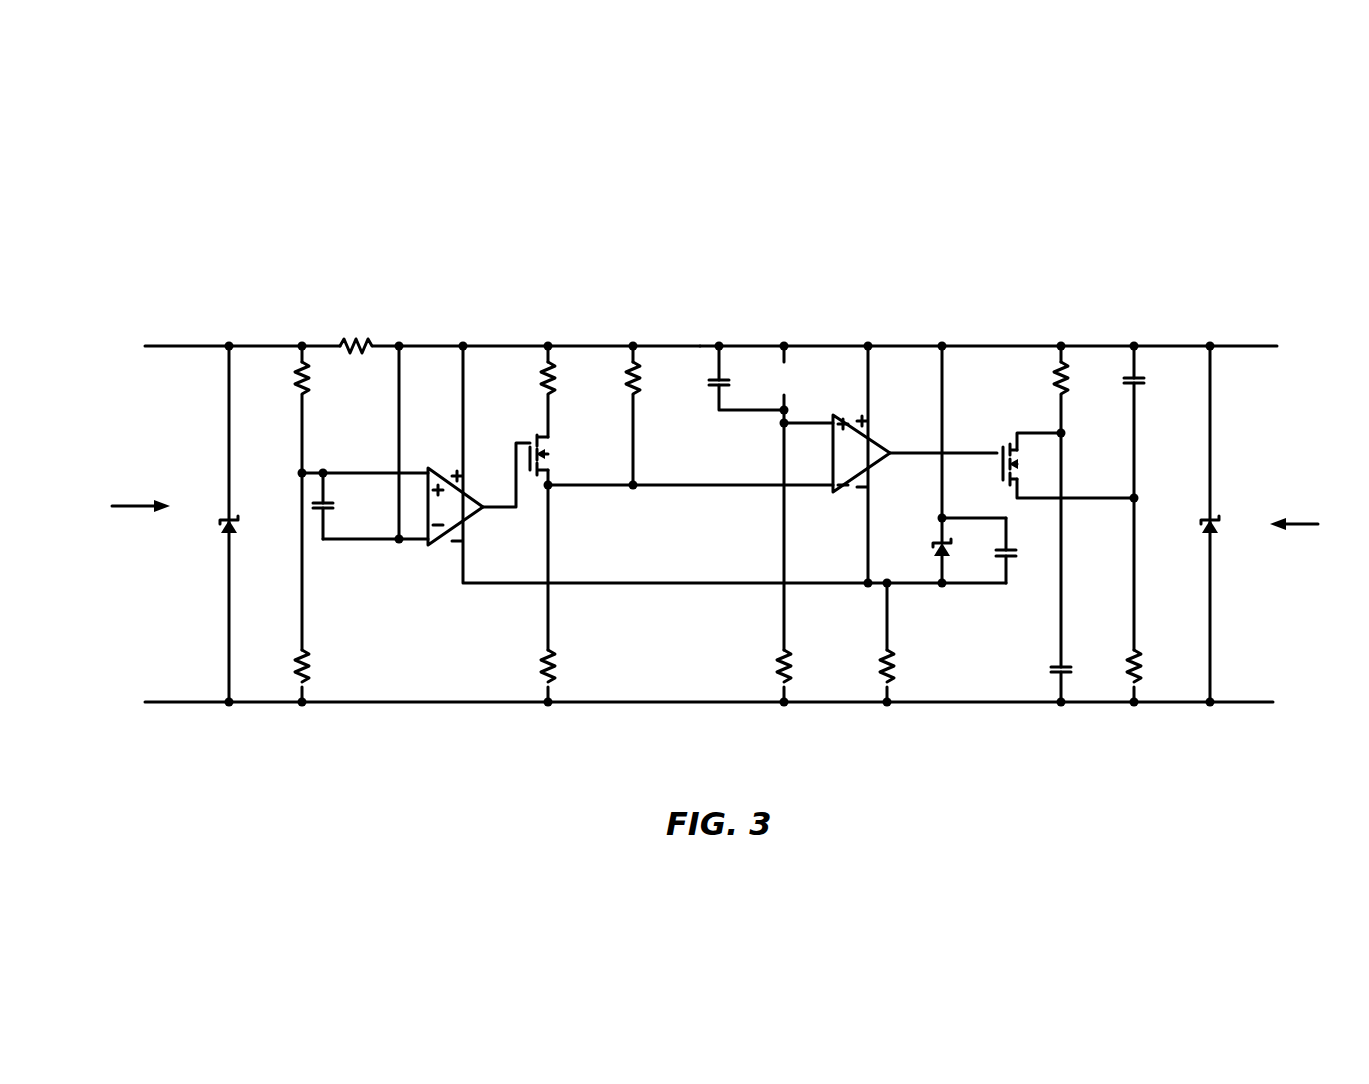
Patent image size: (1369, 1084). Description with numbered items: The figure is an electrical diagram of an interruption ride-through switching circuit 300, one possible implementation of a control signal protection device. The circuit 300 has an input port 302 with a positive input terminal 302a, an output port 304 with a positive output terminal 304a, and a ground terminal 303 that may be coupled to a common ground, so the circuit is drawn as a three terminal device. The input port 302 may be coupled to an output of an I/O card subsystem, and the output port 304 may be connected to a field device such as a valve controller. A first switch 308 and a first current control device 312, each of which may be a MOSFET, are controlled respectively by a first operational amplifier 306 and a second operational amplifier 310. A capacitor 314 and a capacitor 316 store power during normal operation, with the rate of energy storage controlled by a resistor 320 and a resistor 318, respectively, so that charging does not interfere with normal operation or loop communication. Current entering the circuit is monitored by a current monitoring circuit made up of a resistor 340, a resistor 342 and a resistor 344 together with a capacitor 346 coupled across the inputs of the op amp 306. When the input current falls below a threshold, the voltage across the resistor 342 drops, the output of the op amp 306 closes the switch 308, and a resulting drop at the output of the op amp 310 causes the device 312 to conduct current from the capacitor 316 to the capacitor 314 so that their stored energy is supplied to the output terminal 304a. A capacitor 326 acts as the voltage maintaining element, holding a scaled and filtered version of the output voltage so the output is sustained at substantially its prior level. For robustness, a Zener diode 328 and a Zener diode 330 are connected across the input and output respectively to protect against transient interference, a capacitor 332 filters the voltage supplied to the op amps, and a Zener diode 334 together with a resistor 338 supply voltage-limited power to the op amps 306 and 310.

The interruption ride-through switching circuit 300 is at (944, 244).
The input port 302 is at (119, 506).
The positive input terminal 302a is at (177, 344).
The ground terminal 303 is at (1264, 730).
The output port 304 is at (1317, 524).
The positive output terminal 304a is at (1253, 344).
The first operational amplifier 306 is at (466, 490).
The first switch 308 is at (544, 456).
The second operational amplifier 310 is at (873, 440).
The first current control device 312 is at (1014, 465).
The capacitor 314 is at (1139, 378).
The capacitor 316 is at (1067, 665).
The resistor 318 is at (781, 657).
The resistor 320 is at (1140, 665).
The capacitor 326 is at (723, 378).
The Zener diode 328 is at (235, 520).
The Zener diode 330 is at (1218, 520).
The capacitor 332 is at (1012, 560).
The Zener diode 334 is at (947, 556).
The resistor 338 is at (884, 657).
The resistor 340 is at (300, 366).
The resistor 342 is at (372, 342).
The resistor 344 is at (310, 660).
The capacitor 346 is at (330, 506).